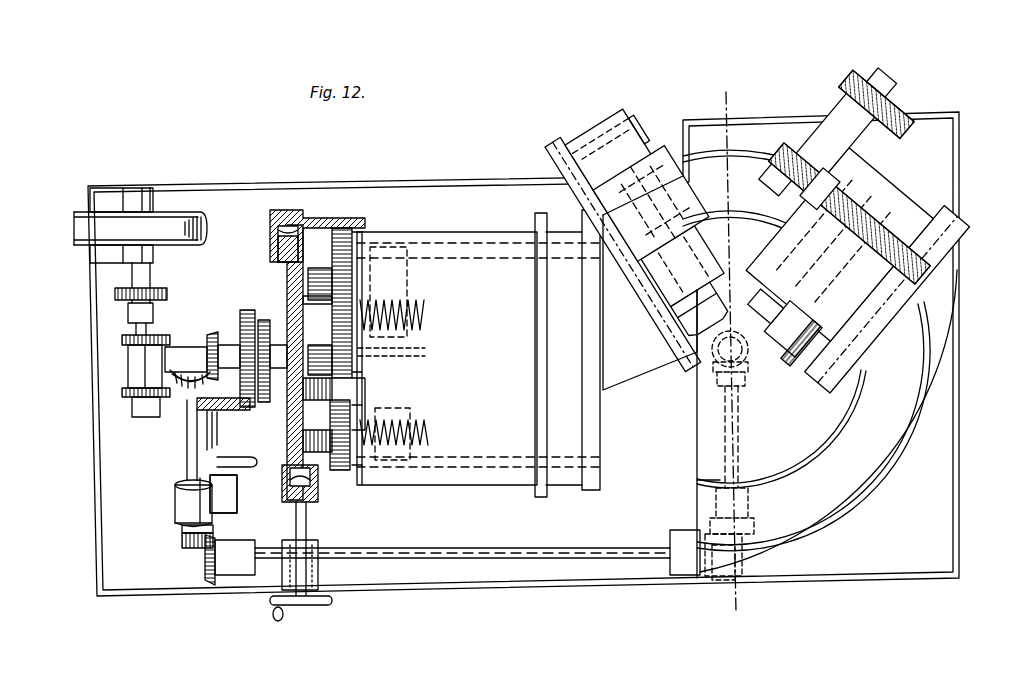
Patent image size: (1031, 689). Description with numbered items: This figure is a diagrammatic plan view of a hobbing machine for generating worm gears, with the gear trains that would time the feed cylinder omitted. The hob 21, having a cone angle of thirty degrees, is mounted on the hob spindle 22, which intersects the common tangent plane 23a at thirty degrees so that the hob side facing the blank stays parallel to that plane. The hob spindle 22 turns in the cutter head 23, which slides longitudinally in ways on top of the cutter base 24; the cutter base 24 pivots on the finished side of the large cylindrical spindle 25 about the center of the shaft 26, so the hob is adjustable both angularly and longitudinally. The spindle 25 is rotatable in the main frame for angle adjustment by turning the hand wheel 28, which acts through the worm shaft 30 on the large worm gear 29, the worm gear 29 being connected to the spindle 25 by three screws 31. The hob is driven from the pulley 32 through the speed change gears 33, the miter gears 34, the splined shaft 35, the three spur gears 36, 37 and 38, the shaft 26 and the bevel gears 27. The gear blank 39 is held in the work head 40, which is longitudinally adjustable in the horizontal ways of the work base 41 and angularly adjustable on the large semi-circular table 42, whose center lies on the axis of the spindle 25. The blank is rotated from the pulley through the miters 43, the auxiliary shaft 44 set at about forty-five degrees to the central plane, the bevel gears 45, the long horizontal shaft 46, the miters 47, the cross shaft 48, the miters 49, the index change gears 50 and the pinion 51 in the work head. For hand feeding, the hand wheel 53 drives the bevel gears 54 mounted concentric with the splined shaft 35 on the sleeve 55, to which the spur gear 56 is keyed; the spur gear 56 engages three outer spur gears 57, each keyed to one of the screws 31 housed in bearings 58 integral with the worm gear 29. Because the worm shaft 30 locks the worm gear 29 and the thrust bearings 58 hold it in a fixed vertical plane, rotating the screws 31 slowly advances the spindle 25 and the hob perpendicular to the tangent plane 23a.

The hob 21 is at (700, 330).
The hob spindle 22 is at (595, 118).
The cutter head 23 is at (640, 118).
The common tangent plane 23a is at (730, 207).
The cutter base 24 is at (560, 158).
The spindle 25 is at (552, 237).
The shaft 26 is at (468, 245).
The bevel gears 27 is at (690, 215).
The hand wheel 28 is at (332, 601).
The worm gear 29 is at (320, 495).
The worm shaft 30 is at (300, 505).
The screws 31 is at (420, 318).
The pulley 32 is at (110, 232).
The speed change gears 33 is at (135, 295).
The miter gears 34 is at (128, 350).
The splined shaft 35 is at (425, 360).
The spur gear 36 is at (352, 375).
The spur gear 37 is at (352, 282).
The spur gear 38 is at (342, 228).
The gear blank 39 is at (790, 345).
The work head 40 is at (900, 208).
The work base 41 is at (948, 292).
The semi-circular table 42 is at (952, 360).
The miters 43 is at (207, 345).
The auxiliary shaft 44 is at (190, 445).
The bevel gears 45 is at (182, 540).
The long horizontal shaft 46 is at (614, 545).
The miters 47 is at (722, 585).
The cross shaft 48 is at (738, 455).
The miters 49 is at (738, 385).
The index change gears 50 is at (893, 112).
The pinion 51 is at (800, 150).
The hand wheel 53 is at (223, 494).
The bevel gears 54 is at (245, 320).
The sleeve 55 is at (258, 335).
The spur gear 56 is at (258, 300).
The outer spur gears 57 is at (290, 215).
The bearings 58 is at (340, 290).